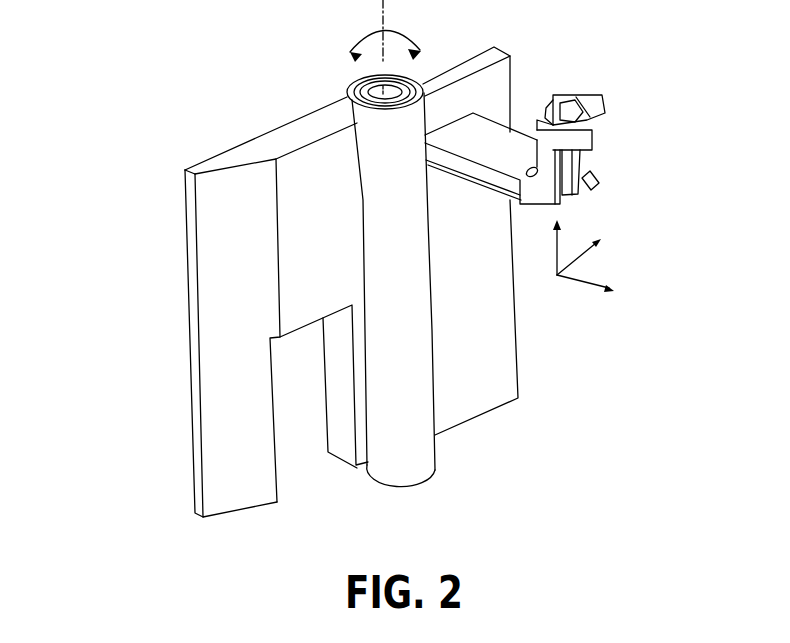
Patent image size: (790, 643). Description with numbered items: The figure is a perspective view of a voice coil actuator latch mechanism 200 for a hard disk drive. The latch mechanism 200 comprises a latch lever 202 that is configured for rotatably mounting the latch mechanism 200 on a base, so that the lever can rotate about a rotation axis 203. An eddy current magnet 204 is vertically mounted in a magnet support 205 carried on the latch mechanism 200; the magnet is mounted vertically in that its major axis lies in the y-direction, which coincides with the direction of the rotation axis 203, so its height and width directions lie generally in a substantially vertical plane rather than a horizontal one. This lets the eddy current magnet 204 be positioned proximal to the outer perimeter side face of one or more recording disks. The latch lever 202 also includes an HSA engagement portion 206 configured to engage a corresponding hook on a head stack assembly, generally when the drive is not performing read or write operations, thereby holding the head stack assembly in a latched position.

The latch mechanism 200 is at (133, 73).
The latch lever 202 is at (502, 387).
The rotation axis 203 is at (388, 14).
The eddy current magnet 204 is at (562, 93).
The magnet support 205 is at (606, 108).
The HSA engagement portion 206 is at (232, 489).